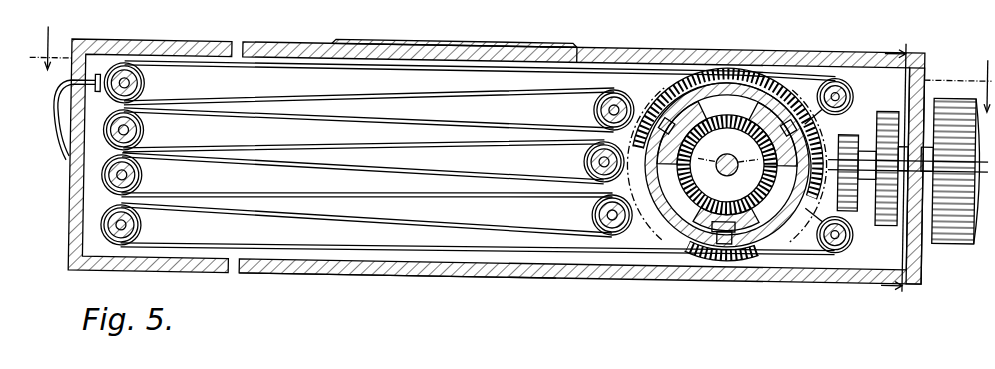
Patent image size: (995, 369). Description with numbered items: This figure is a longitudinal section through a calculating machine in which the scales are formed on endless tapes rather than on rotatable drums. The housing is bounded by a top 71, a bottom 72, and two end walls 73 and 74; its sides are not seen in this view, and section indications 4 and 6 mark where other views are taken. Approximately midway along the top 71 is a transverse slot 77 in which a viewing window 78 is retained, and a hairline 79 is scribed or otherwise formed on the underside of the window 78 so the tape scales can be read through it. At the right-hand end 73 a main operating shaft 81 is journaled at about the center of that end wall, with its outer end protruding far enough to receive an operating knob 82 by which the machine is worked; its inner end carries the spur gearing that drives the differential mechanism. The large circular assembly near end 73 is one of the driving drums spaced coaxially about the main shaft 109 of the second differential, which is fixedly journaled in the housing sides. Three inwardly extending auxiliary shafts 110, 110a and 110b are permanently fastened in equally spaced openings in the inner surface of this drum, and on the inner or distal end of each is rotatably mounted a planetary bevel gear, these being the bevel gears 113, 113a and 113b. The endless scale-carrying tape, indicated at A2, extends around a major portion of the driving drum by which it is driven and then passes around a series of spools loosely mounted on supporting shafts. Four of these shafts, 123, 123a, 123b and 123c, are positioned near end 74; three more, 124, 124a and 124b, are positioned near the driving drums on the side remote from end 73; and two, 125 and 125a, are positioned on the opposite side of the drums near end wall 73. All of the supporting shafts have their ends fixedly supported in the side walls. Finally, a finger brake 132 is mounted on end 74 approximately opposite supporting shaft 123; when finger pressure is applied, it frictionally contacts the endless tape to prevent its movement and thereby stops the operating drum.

The top 71 is at (200, 39).
The bottom 72 is at (295, 270).
The end 73 is at (925, 246).
The end 74 is at (72, 228).
The transverse slot 77 is at (585, 50).
The viewing window 78 is at (535, 39).
The hairline 79 is at (455, 36).
The main operating shaft 81 is at (875, 180).
The operating knob 82 is at (956, 84).
The main shaft of second differential 109 is at (727, 165).
The auxiliary shaft 110 is at (676, 91).
The auxiliary shaft 110a is at (737, 240).
The auxiliary shaft 110b is at (794, 89).
The planetary bevel gear 113 is at (693, 103).
The planetary bevel gear 113a is at (712, 214).
The planetary bevel gear 113b is at (765, 103).
The supporting shaft 123 is at (147, 82).
The supporting shaft 123a is at (147, 129).
The supporting shaft 123b is at (146, 174).
The supporting shaft 123c is at (146, 224).
The supporting shaft 124 is at (595, 101).
The supporting shaft 124a is at (586, 153).
The supporting shaft 124b is at (595, 206).
The supporting shaft 125 is at (848, 78).
The supporting shaft 125a is at (850, 232).
The finger brake 132 is at (58, 88).
The tape / band A2 is at (362, 64).
The section line 4- 4 is at (510, 69).
The section line 6- 6 is at (895, 168).